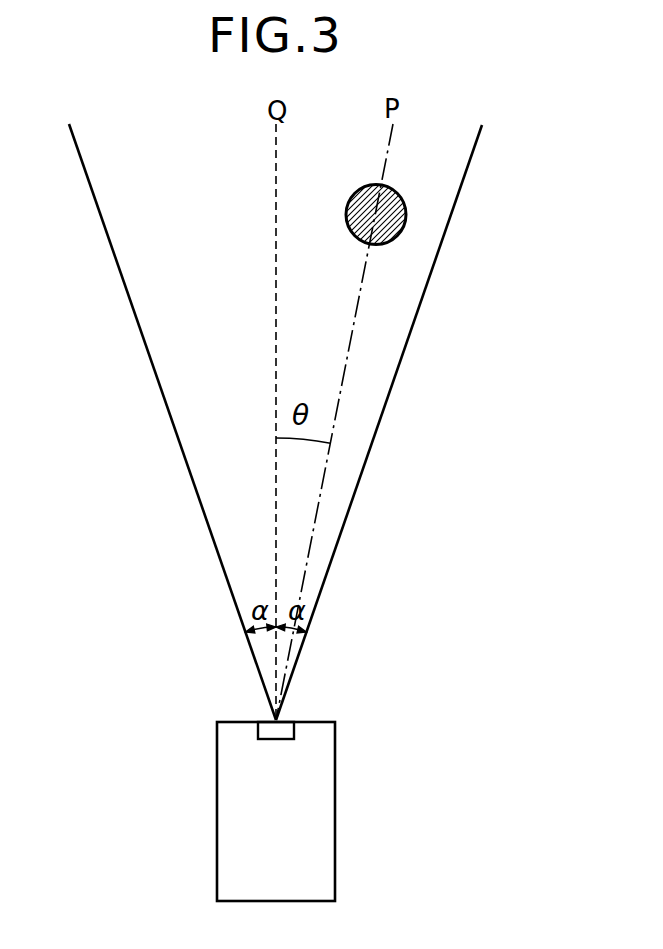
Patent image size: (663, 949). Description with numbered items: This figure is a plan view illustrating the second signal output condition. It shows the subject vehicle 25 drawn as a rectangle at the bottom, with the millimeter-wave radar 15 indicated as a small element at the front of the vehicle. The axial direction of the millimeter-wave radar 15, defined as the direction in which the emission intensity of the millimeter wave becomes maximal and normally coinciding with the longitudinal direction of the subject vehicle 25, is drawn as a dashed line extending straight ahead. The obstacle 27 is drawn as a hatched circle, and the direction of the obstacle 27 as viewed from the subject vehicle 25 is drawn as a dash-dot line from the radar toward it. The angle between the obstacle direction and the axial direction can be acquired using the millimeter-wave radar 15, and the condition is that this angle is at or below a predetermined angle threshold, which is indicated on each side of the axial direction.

The millimeter-wave radar 15 is at (267, 740).
The subject vehicle 25 is at (335, 805).
The obstacle 27 is at (407, 212).